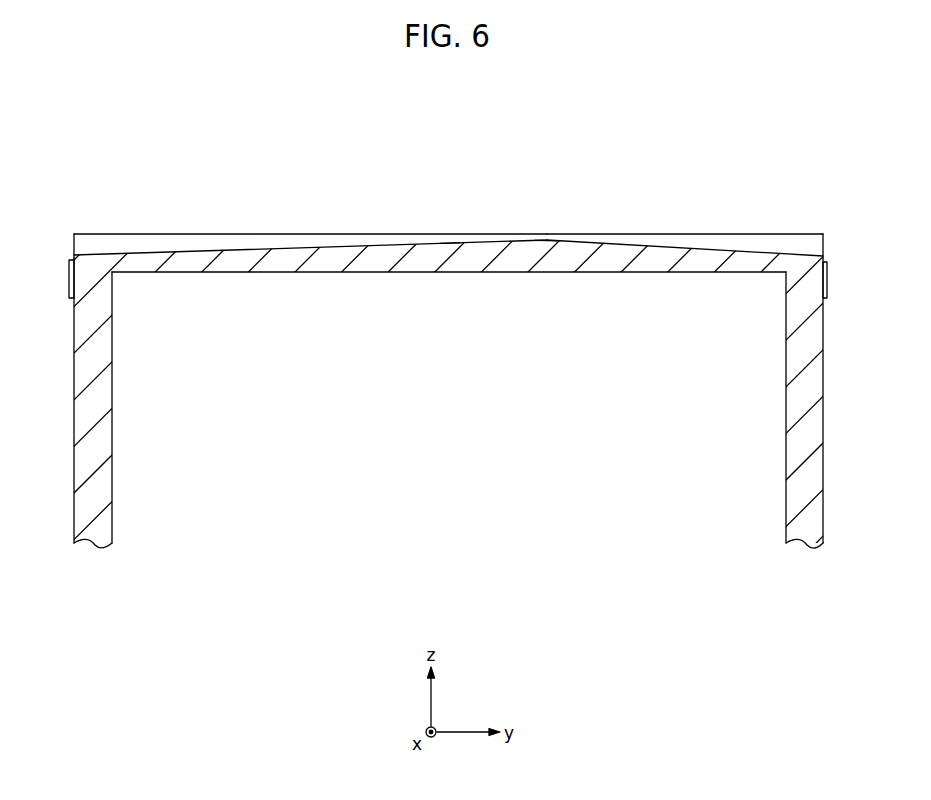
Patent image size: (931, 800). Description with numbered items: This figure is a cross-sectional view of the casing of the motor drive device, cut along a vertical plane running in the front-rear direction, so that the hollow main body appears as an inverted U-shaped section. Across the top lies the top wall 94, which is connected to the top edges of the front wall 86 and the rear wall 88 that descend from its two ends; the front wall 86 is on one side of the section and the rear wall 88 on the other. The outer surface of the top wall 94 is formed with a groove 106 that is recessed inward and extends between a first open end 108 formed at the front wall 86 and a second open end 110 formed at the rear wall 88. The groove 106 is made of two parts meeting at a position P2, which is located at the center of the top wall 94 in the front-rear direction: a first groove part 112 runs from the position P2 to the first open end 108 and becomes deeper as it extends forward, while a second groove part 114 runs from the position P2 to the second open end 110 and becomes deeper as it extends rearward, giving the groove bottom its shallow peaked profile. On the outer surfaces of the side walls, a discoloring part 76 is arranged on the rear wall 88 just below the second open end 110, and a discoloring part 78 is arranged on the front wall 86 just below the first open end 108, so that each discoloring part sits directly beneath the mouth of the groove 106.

The discoloring part 76 is at (68, 282).
The discoloring part 78 is at (828, 282).
The front wall 86 is at (803, 437).
The rear wall 88 is at (102, 443).
The top wall 94 is at (471, 262).
The groove 106 is at (550, 233).
The first open end 108 is at (823, 243).
The second open end 110 is at (73, 246).
The first groove part 112 is at (708, 245).
The second groove part 114 is at (186, 244).
The position P2 is at (449, 240).